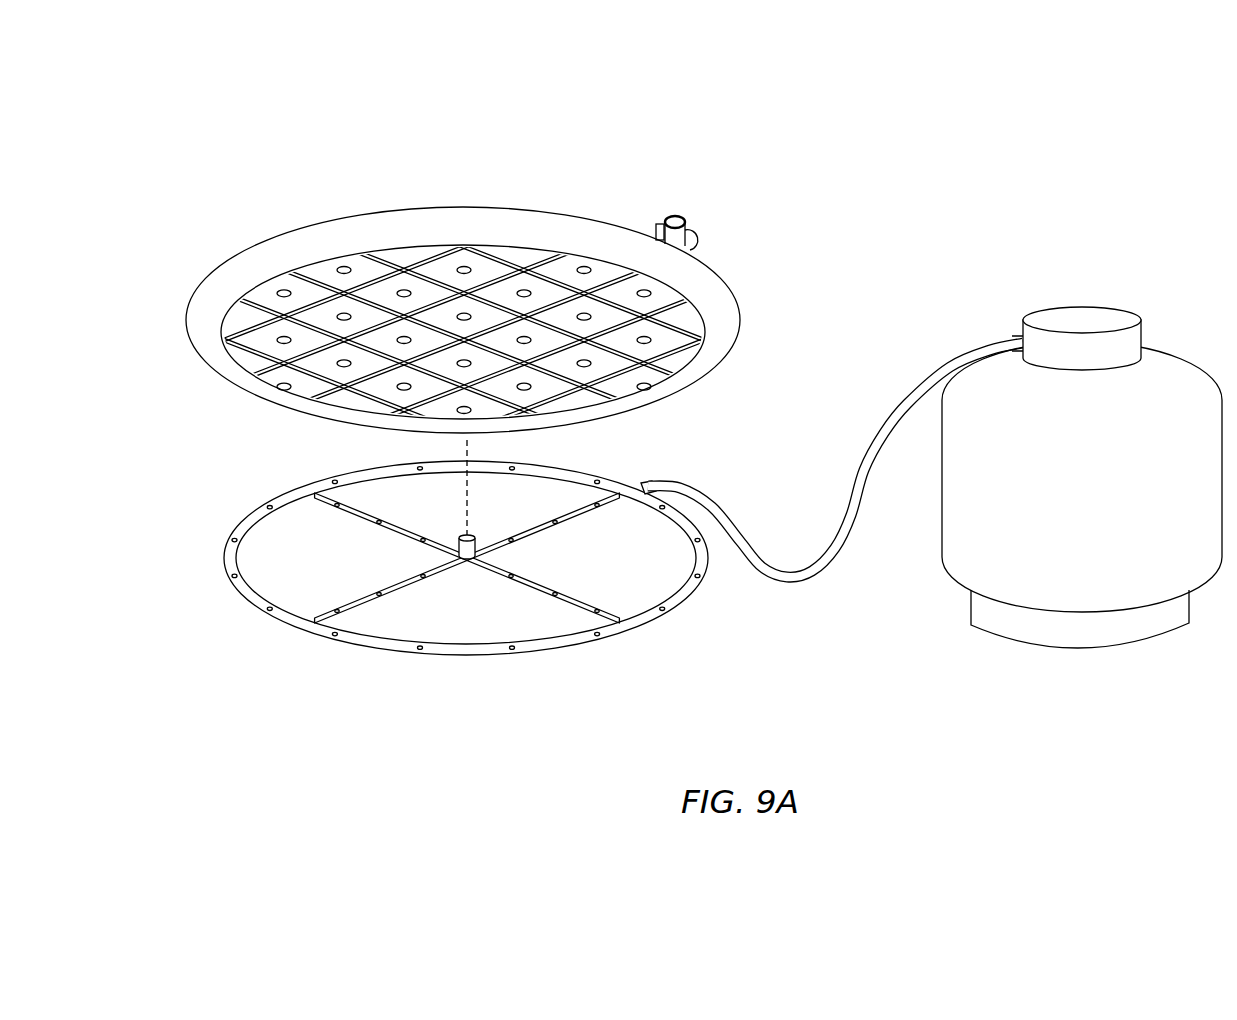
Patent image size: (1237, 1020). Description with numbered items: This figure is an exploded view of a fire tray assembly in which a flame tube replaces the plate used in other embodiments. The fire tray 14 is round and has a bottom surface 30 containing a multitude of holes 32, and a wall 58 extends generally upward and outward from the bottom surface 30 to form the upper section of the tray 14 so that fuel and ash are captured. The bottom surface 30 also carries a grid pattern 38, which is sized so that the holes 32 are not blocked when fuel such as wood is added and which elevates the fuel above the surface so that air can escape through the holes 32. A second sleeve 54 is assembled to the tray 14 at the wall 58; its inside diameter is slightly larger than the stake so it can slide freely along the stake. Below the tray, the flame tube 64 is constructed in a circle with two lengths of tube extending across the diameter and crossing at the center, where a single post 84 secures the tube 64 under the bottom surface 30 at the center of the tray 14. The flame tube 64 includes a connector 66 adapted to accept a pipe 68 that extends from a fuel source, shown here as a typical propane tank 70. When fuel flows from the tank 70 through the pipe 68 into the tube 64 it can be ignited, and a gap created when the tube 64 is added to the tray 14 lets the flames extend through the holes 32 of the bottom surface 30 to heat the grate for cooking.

The fire tray 14 is at (255, 258).
The wall 58 is at (332, 243).
The bottom surface 30 is at (405, 253).
The holes 32 is at (466, 264).
The grid pattern 38 is at (545, 261).
The second sleeve 54 is at (680, 240).
The flame tube 64 is at (460, 647).
The post 84 is at (458, 543).
The connector 66 is at (658, 492).
The pipe 68 is at (917, 388).
The propane tank 70 is at (1148, 403).